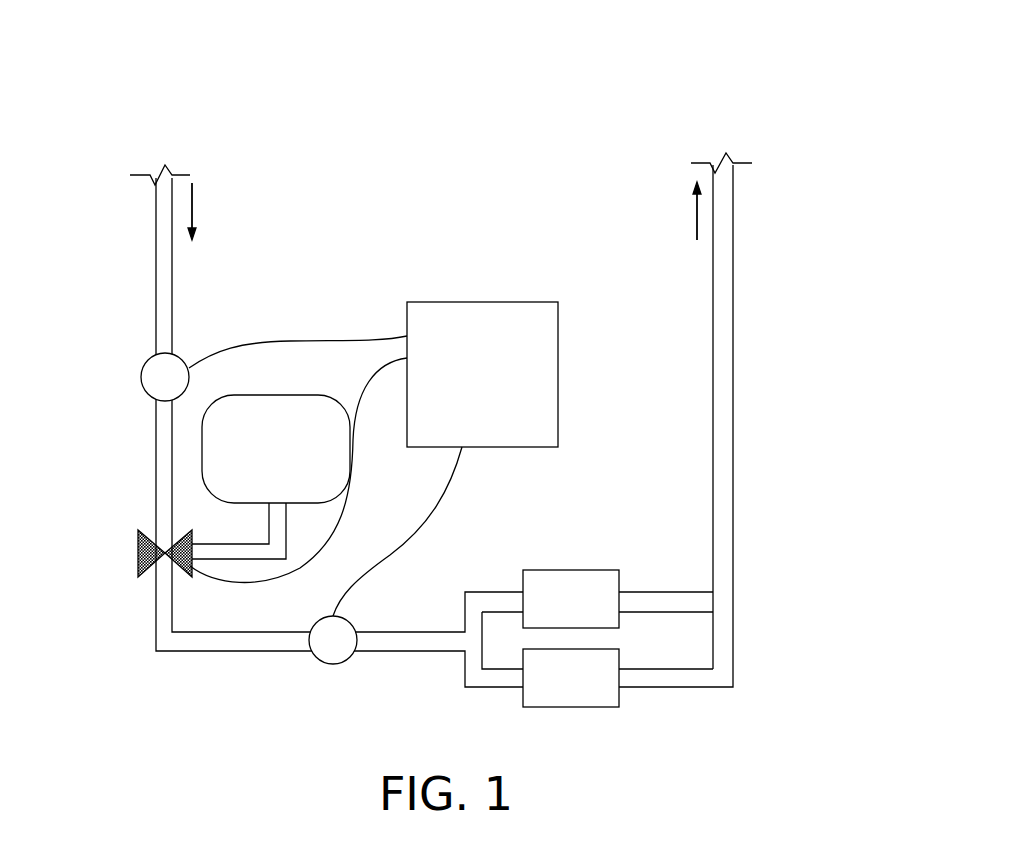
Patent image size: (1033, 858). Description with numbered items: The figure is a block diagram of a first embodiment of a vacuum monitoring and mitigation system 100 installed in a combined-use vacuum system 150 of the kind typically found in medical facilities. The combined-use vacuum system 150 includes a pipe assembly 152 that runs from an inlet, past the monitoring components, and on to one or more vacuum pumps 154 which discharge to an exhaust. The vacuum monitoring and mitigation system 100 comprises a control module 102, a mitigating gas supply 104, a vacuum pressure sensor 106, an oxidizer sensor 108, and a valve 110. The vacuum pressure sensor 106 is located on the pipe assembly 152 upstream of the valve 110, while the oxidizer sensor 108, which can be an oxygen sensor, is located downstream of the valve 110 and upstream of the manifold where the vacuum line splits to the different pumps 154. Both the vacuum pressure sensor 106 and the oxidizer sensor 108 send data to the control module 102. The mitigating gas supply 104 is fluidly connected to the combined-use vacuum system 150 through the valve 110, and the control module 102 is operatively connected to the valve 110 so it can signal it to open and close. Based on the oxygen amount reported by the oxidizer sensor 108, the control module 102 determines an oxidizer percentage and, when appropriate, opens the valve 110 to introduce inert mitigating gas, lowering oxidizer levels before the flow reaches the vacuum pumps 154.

The vacuum monitoring and mitigation system 100 is at (590, 102).
The combined-use vacuum system 150 is at (141, 158).
The pipe assembly 152 is at (157, 475).
The vacuum pressure sensor 106 is at (141, 370).
The mitigating gas supply 104 is at (287, 393).
The valve 110 is at (138, 551).
The control module 102 is at (497, 302).
The oxidizer sensor 108 is at (325, 662).
The vacuum pumps 154 is at (577, 570).